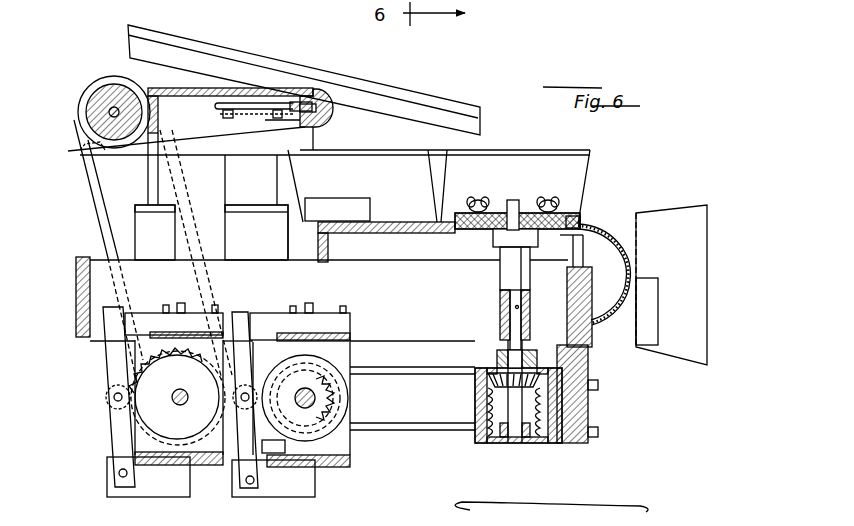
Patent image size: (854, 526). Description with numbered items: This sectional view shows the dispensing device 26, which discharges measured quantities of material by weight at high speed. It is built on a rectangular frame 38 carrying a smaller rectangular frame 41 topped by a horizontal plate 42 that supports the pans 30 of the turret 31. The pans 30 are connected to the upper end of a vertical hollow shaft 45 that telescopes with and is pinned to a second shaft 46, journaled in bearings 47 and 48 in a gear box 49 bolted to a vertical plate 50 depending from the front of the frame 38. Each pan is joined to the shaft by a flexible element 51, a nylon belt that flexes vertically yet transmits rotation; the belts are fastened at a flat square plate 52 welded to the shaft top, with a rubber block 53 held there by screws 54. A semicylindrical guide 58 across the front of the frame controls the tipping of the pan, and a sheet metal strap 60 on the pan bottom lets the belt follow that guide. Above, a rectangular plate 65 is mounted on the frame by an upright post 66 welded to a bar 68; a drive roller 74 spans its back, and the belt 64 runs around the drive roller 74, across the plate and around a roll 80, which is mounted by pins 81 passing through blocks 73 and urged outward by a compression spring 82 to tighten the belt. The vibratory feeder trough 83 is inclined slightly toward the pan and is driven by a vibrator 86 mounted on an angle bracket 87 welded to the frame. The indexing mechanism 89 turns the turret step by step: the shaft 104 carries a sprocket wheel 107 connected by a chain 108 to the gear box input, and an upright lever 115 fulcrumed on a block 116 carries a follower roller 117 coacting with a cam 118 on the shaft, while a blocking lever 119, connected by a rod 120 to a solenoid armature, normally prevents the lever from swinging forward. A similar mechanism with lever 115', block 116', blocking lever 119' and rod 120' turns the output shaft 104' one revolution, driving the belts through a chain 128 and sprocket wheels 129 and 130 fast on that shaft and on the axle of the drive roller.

The dispensing device 26 is at (694, 164).
The receptacle (pan) 30 is at (708, 301).
The turret 31 is at (499, 279).
The rectangular frame 38 is at (78, 323).
The smaller rectangular frame 41 is at (328, 249).
The horizontal plate 42 is at (380, 233).
The vertical hollow shaft 45 is at (500, 302).
The second shaft 46 is at (510, 338).
The bearing 47 is at (490, 364).
The bearing 48 is at (508, 445).
The gear box 49 is at (478, 441).
The vertical plate 50 is at (590, 364).
The flexible element (nylon belt) 51 is at (446, 233).
The flat square plate 52 is at (517, 230).
The rubber block 53 is at (580, 217).
The screws 54 is at (544, 206).
The semicylindrical guide 58 is at (604, 320).
The sheet metal strap 60 is at (335, 200).
The belt 64 is at (313, 92).
The rectangular plate 65 is at (223, 88).
The upright post 66 is at (225, 187).
The bar 68 is at (169, 145).
The blocks 73 is at (275, 120).
The drive roller 74 is at (103, 97).
The roll 80 is at (340, 92).
The pins 81 is at (216, 107).
The compression spring 82 is at (300, 127).
The trough 83 is at (433, 103).
The vibrator 86 is at (153, 189).
The angle bracket 87 is at (292, 250).
The indexing mechanism 89 is at (96, 456).
The shaft 104 is at (327, 398).
The output shaft 104' is at (177, 396).
The sprocket wheel 107 is at (412, 360).
The chain 108 is at (378, 430).
The upright lever 115 is at (252, 386).
The upright lever 115' is at (99, 397).
The block 116 is at (291, 485).
The block 116' is at (165, 484).
The follower roller 117 is at (250, 360).
The cam 118 is at (293, 433).
The blocking lever 119 is at (300, 311).
The blocking lever 119' is at (174, 307).
The rod 120 is at (332, 297).
The rod 120' is at (218, 289).
The chain 128 is at (97, 228).
The sprocket wheel 129 is at (148, 358).
The sprocket wheel 130 is at (168, 255).